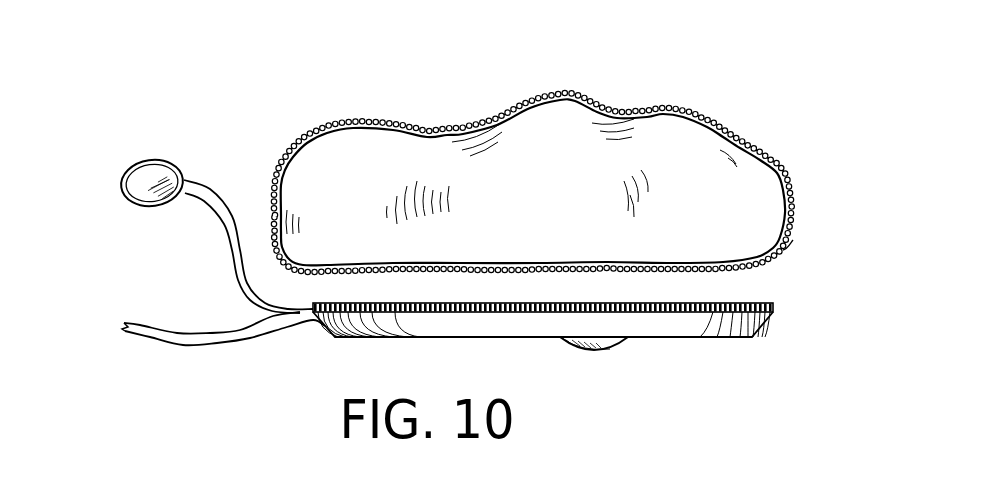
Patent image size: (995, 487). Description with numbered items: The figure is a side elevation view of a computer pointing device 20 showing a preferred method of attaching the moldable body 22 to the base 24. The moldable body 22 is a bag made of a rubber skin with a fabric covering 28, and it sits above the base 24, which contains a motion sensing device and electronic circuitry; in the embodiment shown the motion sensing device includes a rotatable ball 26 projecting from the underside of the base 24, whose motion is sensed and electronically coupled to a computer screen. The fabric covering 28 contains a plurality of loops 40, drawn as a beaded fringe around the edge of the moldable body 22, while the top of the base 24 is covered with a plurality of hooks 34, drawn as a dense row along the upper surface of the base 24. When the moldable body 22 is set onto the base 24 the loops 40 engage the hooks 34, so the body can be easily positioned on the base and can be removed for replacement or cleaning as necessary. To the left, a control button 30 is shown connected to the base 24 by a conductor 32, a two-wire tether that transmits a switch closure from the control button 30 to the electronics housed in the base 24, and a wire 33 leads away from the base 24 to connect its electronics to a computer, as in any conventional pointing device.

The computer pointing device 20 is at (800, 135).
The moldable body 22 is at (783, 250).
The base 24 is at (752, 338).
The rotatable ball 26 is at (611, 353).
The fabric covering 28 is at (486, 180).
The control button 30 is at (120, 188).
The conductor 32 is at (234, 277).
The wire 33 is at (237, 338).
The hooks 34 is at (773, 308).
The loops 40 is at (679, 107).